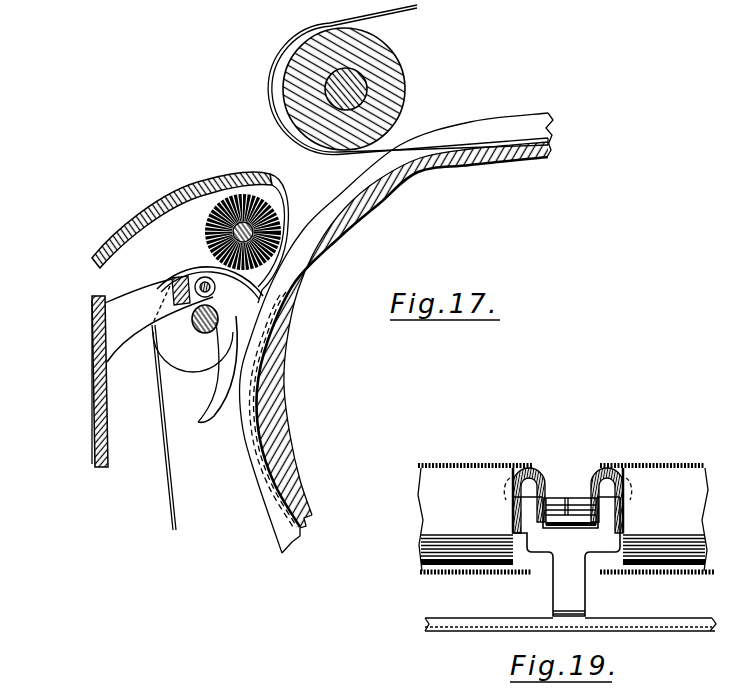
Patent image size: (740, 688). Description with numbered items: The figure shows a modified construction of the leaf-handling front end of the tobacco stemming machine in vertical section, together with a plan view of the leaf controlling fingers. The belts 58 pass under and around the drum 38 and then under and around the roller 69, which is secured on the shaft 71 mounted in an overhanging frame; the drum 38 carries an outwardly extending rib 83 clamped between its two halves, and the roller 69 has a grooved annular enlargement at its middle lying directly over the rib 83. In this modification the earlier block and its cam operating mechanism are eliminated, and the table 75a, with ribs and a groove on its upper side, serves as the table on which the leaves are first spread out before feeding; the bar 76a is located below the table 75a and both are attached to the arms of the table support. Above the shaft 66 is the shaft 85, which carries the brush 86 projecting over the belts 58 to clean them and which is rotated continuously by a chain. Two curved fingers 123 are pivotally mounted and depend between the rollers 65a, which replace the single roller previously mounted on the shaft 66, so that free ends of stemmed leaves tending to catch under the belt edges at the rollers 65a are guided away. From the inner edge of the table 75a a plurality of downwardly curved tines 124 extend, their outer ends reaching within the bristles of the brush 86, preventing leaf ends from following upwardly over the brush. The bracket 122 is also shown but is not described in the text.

In FIG. 17, the shaft 71 is at (352, 78).
In FIG. 17, the roller 69 is at (395, 90).
In FIG. 17, the belts 58 is at (425, 145).
In FIG. 19, the belts 58 is at (498, 463).
In FIG. 17, the rib 83 is at (495, 122).
In FIG. 17, the drum 38 is at (372, 207).
In FIG. 17, the table 75a is at (168, 190).
In FIG. 17, the downwardly curved tines 124 is at (283, 207).
In FIG. 17, the brush 86 is at (205, 233).
In FIG. 17, the shaft 85 is at (252, 252).
In FIG. 17, the plate 122 is at (117, 315).
In FIG. 19, the plate 122 is at (560, 580).
In FIG. 17, the bar 76a is at (100, 375).
In FIG. 19, the bar 76a is at (663, 632).
In FIG. 17, the rollers 65a is at (173, 343).
In FIG. 19, the rollers 65a is at (443, 478).
In FIG. 17, the shaft 66 is at (203, 332).
In FIG. 17, the curved fingers 123 is at (218, 410).
In FIG. 19, the curved fingers 123 is at (602, 490).